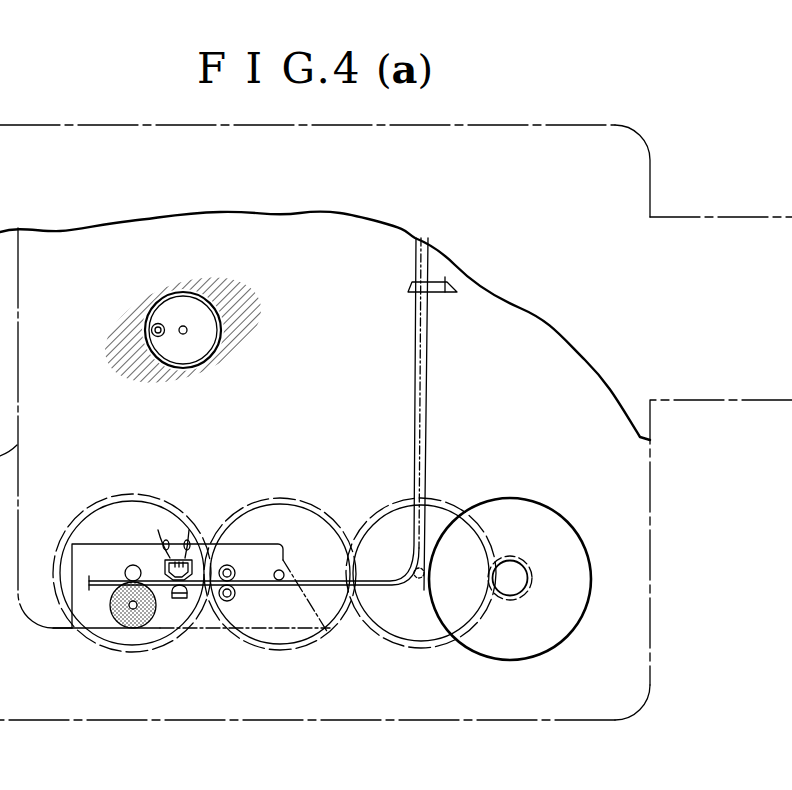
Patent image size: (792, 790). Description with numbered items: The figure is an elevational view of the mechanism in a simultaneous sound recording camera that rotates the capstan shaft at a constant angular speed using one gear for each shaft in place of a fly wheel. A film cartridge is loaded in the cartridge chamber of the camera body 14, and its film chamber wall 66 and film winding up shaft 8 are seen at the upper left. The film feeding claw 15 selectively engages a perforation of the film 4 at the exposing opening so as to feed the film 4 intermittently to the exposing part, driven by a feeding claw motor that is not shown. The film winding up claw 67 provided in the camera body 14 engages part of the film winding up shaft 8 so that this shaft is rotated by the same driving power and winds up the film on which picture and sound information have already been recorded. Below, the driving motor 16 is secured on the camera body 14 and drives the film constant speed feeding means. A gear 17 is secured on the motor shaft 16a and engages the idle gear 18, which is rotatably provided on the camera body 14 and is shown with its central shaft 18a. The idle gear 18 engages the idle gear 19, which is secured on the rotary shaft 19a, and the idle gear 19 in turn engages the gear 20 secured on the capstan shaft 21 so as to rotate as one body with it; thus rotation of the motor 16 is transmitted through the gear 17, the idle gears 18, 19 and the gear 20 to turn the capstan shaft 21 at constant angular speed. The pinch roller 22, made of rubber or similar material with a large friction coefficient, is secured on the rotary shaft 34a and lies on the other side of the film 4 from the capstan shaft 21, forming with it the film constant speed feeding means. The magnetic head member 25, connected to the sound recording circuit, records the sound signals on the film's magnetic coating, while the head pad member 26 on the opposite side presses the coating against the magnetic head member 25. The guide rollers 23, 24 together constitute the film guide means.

The film 4 is at (419, 403).
The film winding up shaft 8 is at (165, 353).
The camera body 14 is at (722, 400).
The film feeding claw 15 is at (437, 293).
The driving motor 16 is at (565, 612).
The motor shaft 16a is at (517, 587).
The gear 17 is at (505, 600).
The idle gear 18 is at (415, 633).
The roller shaft 18a is at (415, 570).
The idle gear 19 is at (303, 622).
The rotary shaft 19a is at (280, 569).
The gear 20 is at (157, 632).
The capstan shaft 21 is at (130, 566).
The pinch roller 22 is at (112, 610).
The guide roller 23 is at (232, 565).
The guide roller 24 is at (238, 595).
The magnetic head member 25 is at (192, 577).
The head pad member 26 is at (180, 598).
The rotary shaft 34a is at (133, 610).
The film chamber wall 66 is at (150, 295).
The film winding up claw 67 is at (151, 330).